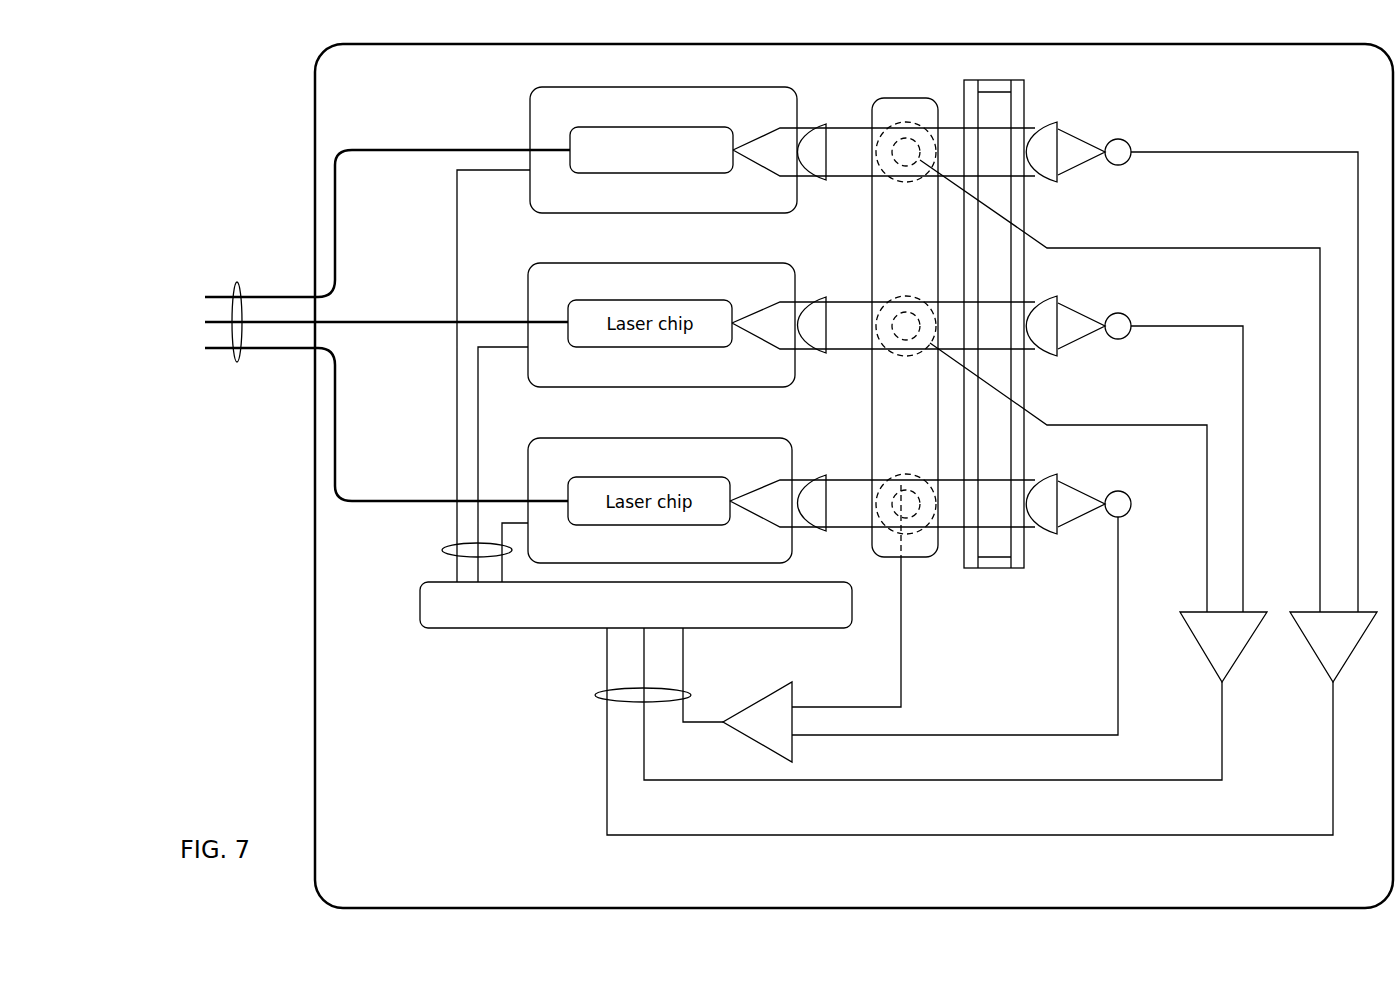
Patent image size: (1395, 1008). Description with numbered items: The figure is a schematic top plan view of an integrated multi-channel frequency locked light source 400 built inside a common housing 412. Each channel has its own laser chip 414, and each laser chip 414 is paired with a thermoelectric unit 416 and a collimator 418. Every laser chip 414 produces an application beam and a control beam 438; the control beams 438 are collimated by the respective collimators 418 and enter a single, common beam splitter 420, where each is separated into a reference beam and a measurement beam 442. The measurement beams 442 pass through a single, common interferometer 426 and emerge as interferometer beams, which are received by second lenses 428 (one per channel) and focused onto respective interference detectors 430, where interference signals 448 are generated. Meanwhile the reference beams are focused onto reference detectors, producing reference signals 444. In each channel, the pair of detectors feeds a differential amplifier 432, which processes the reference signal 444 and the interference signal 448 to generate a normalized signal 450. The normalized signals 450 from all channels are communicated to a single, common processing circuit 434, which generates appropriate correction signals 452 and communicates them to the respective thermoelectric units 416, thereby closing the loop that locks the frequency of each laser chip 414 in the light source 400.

The integrated multi-channel frequency locked light source 400 is at (278, 126).
The common housing 412 is at (315, 256).
The laser chip 414 is at (675, 164).
The thermoelectric unit 416 is at (586, 121).
The collimator 418 is at (823, 182).
The common beam splitter 420 is at (926, 281).
The common interferometer 426 is at (991, 570).
The second lens 428 is at (1056, 185).
The interference detector 430 is at (1120, 170).
The differential amplifier 432 is at (766, 705).
The processing circuit 434 is at (473, 628).
The control beam 438 is at (776, 136).
The measurement beam 442 is at (952, 114).
The reference signal 444 is at (1262, 157).
The interference signal 448 is at (1262, 252).
The normalized signal 450 is at (595, 695).
The correction signal 452 is at (442, 550).